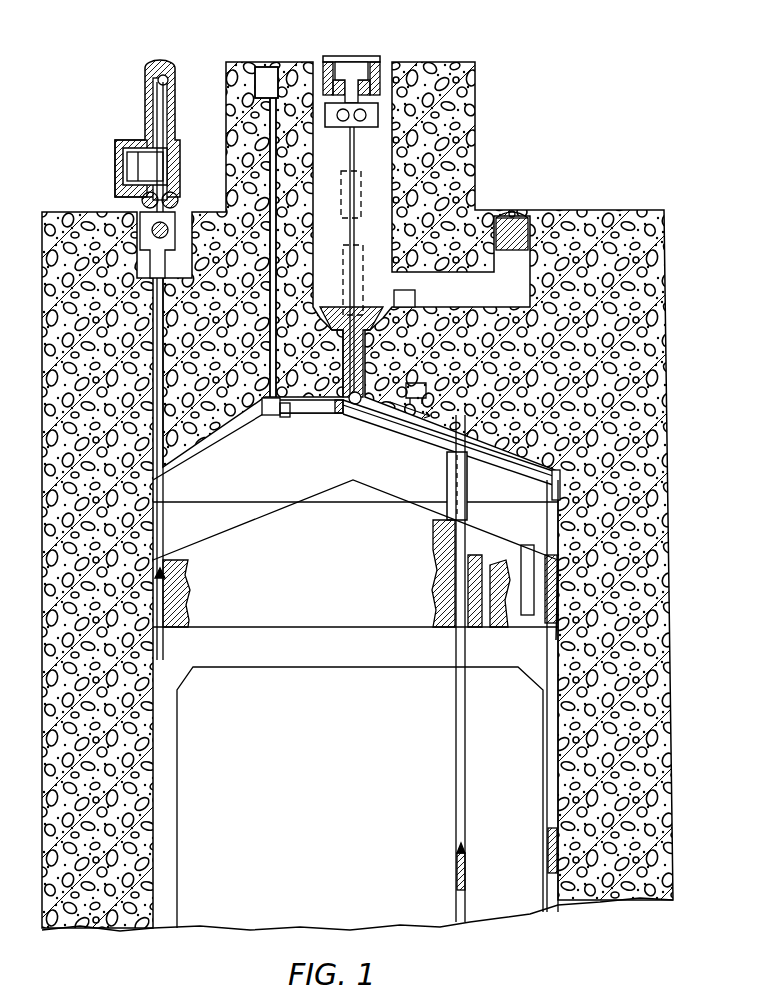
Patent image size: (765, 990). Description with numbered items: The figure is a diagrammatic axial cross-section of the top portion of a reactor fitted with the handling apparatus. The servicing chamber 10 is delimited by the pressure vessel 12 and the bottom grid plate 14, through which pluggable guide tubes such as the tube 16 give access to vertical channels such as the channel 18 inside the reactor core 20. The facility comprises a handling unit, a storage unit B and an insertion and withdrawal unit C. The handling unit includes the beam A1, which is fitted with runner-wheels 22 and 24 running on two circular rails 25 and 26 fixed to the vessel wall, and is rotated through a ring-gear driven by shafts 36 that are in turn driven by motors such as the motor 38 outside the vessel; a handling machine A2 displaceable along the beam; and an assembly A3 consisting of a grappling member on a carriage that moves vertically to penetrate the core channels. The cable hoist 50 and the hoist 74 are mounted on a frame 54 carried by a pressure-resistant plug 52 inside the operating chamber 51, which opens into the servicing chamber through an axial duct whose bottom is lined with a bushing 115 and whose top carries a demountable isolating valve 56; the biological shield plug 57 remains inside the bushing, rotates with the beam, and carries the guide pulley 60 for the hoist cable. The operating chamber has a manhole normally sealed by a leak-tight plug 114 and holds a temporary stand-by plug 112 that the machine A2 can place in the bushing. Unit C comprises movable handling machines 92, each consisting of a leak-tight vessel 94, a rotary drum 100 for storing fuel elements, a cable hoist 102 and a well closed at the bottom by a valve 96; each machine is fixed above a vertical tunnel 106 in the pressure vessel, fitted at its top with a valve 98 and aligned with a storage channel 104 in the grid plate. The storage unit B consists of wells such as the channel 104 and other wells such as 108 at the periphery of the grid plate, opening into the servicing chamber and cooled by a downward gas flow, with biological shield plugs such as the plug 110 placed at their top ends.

The servicing chamber 10 is at (318, 486).
The pressure vessel 12 is at (112, 928).
The bottom grid plate 14 is at (353, 564).
The pluggable guide tube 16 is at (453, 576).
The vertical channel 18 is at (455, 705).
The reactor core 20 is at (351, 719).
The runner-wheel 22 is at (428, 390).
The runner-wheel 24 is at (548, 490).
The circular rail 25 is at (455, 402).
The circular rail 26 is at (556, 515).
The shaft 36 is at (265, 420).
The motor 38 is at (266, 66).
The cable hoist 50 is at (365, 128).
The operating chamber 51 is at (383, 200).
The pressure-resistant plug 52 is at (330, 58).
The frame 54 is at (348, 135).
The isolating valve 56 is at (330, 325).
The biological shield plug 57 is at (318, 415).
The guide pulley 60 is at (352, 410).
The hoist 74 is at (338, 122).
The movable handling machine 92 is at (113, 148).
The leak-tight vessel 94 is at (145, 84).
The valve 96 is at (172, 194).
The valve 98 is at (176, 225).
The rotary drum 100 is at (127, 170).
The cable hoist 102 is at (168, 78).
The storage channel 104 is at (186, 563).
The vertical tunnel 106 is at (165, 460).
The well 108 is at (547, 758).
The biological shield plug 110 is at (522, 212).
The temporary stand-by plug 112 is at (410, 290).
The leak-tight plug 114 is at (512, 252).
The bushing 115 is at (380, 392).
The beam A1 is at (402, 440).
The handling machine A2 is at (446, 482).
The grappling assembly A3 is at (455, 862).
The storage unit B is at (543, 805).
The insertion and withdrawal unit C is at (180, 130).